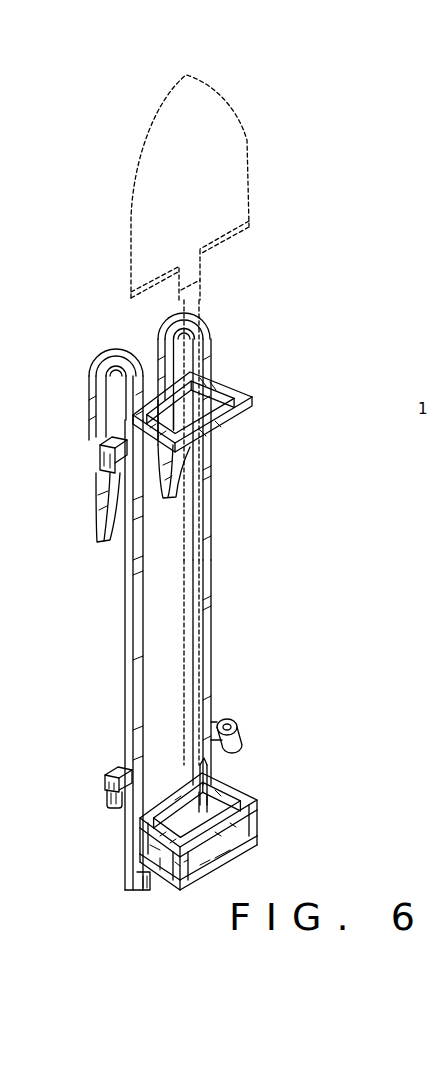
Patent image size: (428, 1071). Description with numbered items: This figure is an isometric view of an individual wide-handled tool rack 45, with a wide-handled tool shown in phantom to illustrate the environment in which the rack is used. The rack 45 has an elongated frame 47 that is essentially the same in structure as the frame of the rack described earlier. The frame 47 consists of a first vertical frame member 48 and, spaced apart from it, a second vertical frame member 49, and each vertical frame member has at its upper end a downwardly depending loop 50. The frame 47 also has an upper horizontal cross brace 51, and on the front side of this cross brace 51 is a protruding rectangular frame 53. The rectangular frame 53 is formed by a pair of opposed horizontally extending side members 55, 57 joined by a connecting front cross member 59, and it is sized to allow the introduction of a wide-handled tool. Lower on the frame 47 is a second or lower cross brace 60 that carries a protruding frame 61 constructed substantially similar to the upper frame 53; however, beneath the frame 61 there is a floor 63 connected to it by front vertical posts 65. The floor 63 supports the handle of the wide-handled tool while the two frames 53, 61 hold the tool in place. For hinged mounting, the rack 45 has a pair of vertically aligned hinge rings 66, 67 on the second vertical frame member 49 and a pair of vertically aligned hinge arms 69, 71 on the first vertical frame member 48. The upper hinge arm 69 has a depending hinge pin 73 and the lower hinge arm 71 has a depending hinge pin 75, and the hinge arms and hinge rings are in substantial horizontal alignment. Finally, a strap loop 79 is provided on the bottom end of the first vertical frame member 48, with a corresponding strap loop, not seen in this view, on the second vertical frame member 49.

The wide-handled tool rack 45 is at (222, 328).
The elongated frame 47 is at (215, 540).
The first vertical frame member 48 is at (125, 590).
The second vertical frame member 49 is at (212, 606).
The downwardly depending loop 50 is at (160, 332).
The upper horizontal cross brace 51 is at (155, 395).
The protruding rectangular frame 53 is at (217, 380).
The horizontally extending side member 55 is at (243, 392).
The horizontally extending side member 57 is at (123, 410).
The front cross member 59 is at (222, 422).
The lower cross brace 60 is at (167, 788).
The protruding frame 61 is at (242, 777).
The floor 63 is at (253, 853).
The front vertical posts 65 is at (257, 830).
The hinge ring 66 is at (223, 417).
The hinge ring 67 is at (240, 722).
The hinge arm 69 is at (103, 450).
The hinge arm 71 is at (112, 771).
The hinge pin 73 is at (107, 475).
The hinge pin 75 is at (115, 807).
The strap loop 79 is at (145, 897).